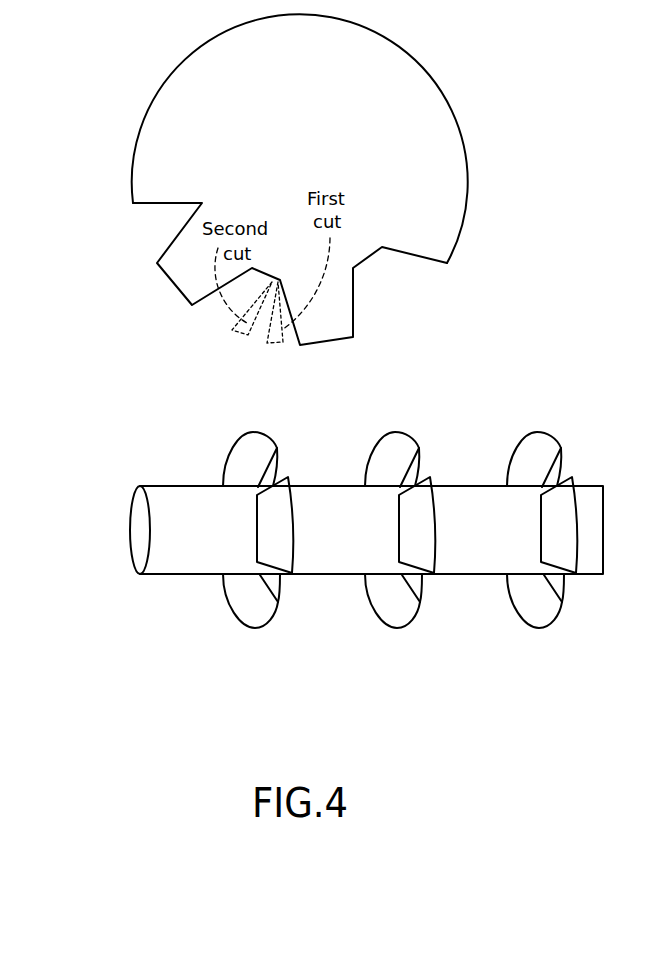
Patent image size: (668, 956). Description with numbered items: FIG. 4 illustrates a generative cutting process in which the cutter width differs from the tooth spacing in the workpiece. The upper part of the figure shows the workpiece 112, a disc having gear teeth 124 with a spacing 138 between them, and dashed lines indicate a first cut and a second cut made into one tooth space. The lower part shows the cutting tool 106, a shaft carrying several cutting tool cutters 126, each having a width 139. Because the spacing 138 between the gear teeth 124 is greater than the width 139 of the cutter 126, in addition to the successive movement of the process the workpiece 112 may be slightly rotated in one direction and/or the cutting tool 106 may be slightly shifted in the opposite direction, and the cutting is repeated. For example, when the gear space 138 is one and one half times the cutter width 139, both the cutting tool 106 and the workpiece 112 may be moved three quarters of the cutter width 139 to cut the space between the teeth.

The workpiece 112 is at (233, 102).
The gear teeth 124 is at (185, 272).
The spacing between gear teeth 138 is at (297, 350).
The cutting tool 106 is at (140, 530).
The cutting tool cutter 126 is at (258, 447).
The cutting tool cutter width 139 is at (315, 658).